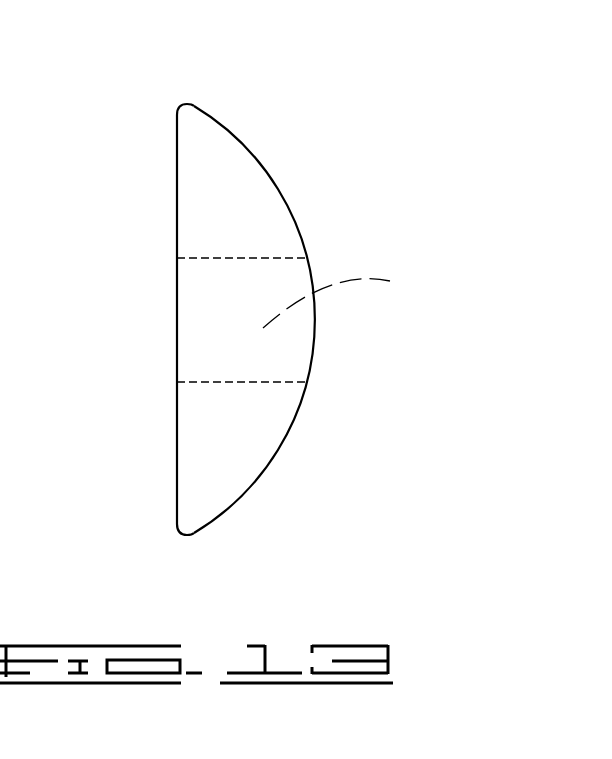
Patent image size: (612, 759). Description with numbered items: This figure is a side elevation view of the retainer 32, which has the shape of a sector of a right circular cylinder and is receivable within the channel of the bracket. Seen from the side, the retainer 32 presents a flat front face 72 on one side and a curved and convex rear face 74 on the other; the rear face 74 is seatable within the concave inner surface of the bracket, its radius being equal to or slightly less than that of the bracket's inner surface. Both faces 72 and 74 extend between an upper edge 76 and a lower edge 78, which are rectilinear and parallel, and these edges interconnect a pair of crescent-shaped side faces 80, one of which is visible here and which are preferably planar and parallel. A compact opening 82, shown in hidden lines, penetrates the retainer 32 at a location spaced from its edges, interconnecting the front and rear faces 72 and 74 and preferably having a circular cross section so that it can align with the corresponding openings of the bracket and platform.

The retainer 32 is at (234, 315).
The flat front face 72 is at (177, 233).
The curved and convex rear face 74 is at (292, 207).
The upper edge 76 is at (187, 105).
The lower edge 78 is at (185, 533).
The crescent-shaped side face 80 is at (230, 428).
The compact opening 82 is at (342, 298).